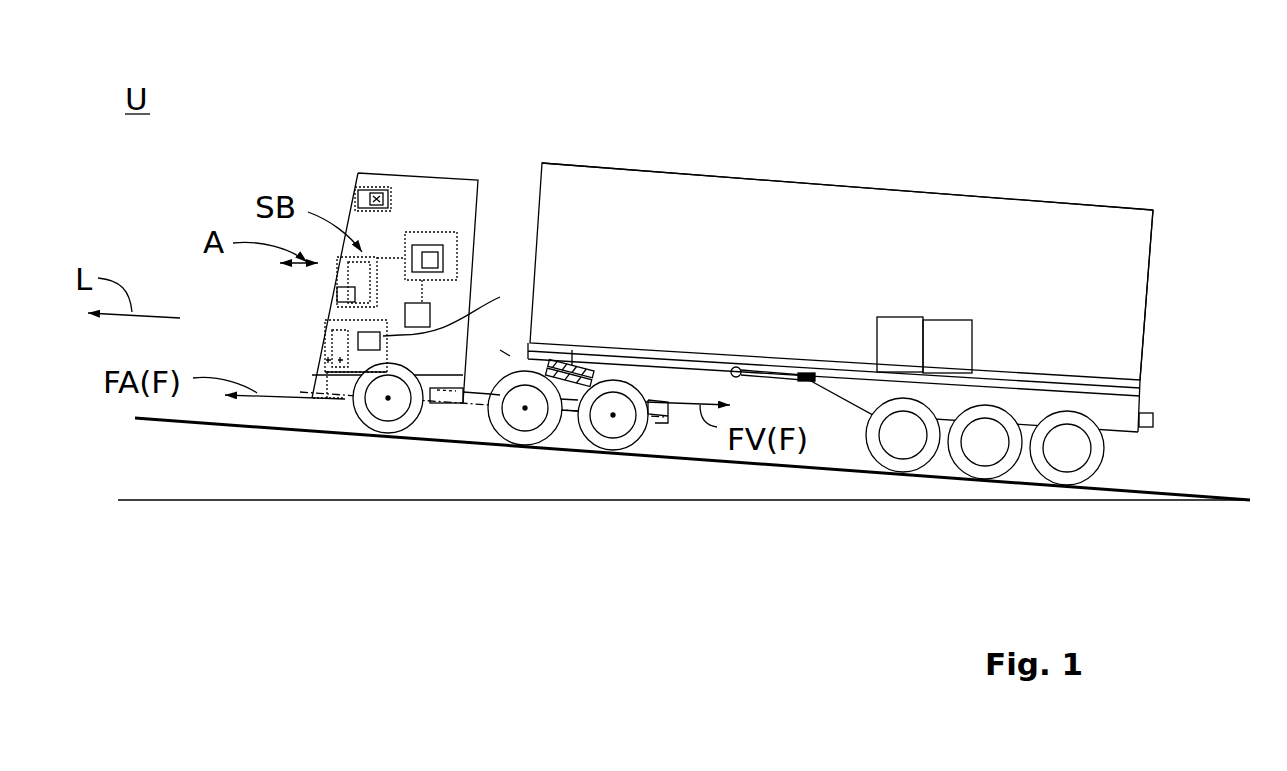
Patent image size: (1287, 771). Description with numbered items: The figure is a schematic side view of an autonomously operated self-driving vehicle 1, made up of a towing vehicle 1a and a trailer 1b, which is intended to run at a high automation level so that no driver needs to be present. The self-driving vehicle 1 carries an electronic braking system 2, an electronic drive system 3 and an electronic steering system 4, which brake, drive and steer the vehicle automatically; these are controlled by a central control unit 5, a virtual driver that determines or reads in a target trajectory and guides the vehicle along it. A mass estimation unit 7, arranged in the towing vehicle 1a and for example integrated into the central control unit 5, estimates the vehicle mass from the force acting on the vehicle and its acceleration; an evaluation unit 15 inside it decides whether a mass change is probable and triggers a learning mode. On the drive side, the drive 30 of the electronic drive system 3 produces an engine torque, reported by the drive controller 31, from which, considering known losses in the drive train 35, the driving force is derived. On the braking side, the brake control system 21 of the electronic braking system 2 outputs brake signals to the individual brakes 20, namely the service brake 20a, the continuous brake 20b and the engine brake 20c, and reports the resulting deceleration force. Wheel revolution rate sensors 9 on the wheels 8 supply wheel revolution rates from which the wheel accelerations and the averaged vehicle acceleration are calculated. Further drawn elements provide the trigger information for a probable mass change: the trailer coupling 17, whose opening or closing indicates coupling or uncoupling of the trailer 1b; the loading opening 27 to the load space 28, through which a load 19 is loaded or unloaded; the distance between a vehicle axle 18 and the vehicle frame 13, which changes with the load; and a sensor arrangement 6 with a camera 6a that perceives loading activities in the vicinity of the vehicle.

The self-driving vehicle 1 is at (518, 150).
The towing vehicle 1a is at (357, 181).
The trailer 1b is at (1153, 290).
The electronic braking system 2 is at (340, 288).
The electronic drive system 3 is at (455, 304).
The electronic steering system 4 is at (425, 313).
The central control unit 5 is at (458, 232).
The sensor arrangement 6 is at (358, 200).
The camera 6a is at (370, 193).
The mass estimation unit 7 is at (420, 245).
The wheels 8 is at (388, 404).
The wheel revolution rate sensors 9 is at (400, 420).
The vehicle frame 13 is at (667, 413).
The evaluation unit 15 is at (432, 252).
The trailer coupling 17 is at (575, 365).
The vehicle axle 18 is at (526, 410).
The load 19 is at (923, 308).
The brakes 20 is at (612, 396).
The service brake 20a is at (383, 390).
The continuous brake 20b is at (505, 352).
The engine brake 20c is at (308, 362).
The brake control system 21 is at (319, 348).
The loading opening 27 is at (1153, 250).
The load space 28 is at (1010, 238).
The drive 30 is at (327, 372).
The drive controller 31 is at (381, 345).
The drive train 35 is at (460, 408).